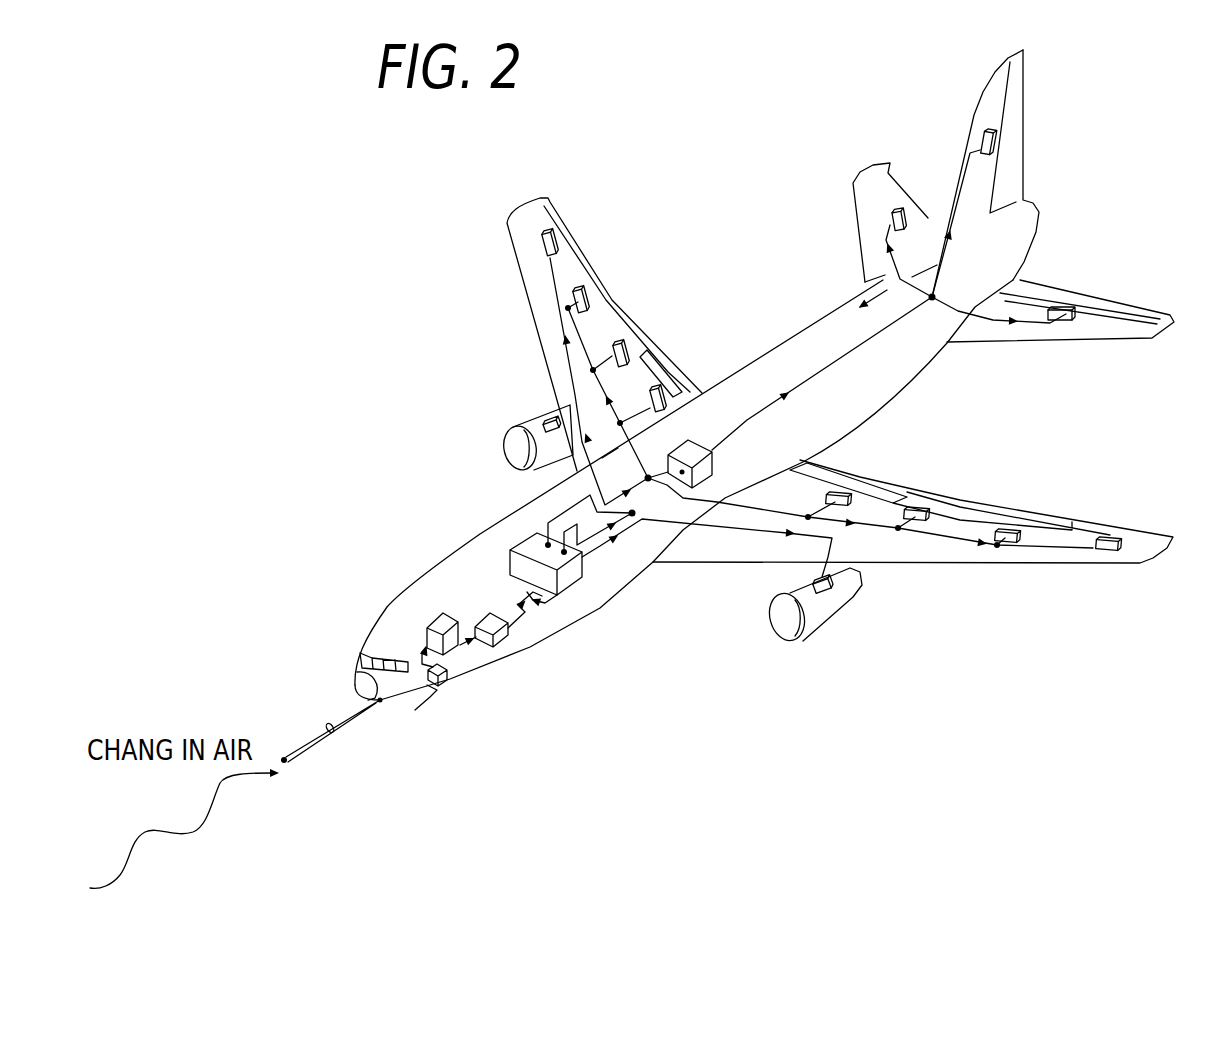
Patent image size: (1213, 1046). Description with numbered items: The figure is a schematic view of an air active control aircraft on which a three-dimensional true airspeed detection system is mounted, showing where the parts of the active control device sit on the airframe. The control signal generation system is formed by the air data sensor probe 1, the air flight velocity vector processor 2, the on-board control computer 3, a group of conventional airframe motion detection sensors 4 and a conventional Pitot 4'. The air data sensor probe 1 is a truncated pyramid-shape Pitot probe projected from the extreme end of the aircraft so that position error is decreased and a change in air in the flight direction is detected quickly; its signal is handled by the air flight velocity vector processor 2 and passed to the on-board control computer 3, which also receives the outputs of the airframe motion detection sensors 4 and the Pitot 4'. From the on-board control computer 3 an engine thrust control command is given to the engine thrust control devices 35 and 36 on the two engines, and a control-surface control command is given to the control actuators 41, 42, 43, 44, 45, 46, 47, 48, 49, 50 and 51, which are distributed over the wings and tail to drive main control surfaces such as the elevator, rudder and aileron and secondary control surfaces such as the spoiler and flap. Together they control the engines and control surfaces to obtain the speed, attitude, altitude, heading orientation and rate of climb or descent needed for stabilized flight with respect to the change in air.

The air data sensor probe 1 is at (287, 760).
The air flight velocity vector processor 2 is at (437, 622).
The on-board control computer 3 is at (570, 580).
The airframe motion detection sensors 4 is at (713, 558).
The conventional Pitot 4' is at (447, 718).
The engine thrust control device 35 is at (827, 593).
The engine thrust control device 36 is at (545, 422).
The control actuator 41 is at (1060, 323).
The control actuator 42 is at (892, 217).
The control actuator 43 is at (980, 140).
The control actuator 44 is at (1113, 548).
The control actuator 45 is at (542, 241).
The control actuator 46 is at (920, 510).
The control actuator 47 is at (627, 357).
The control actuator 48 is at (1013, 543).
The control actuator 49 is at (583, 304).
The control actuator 50 is at (840, 497).
The control actuator 51 is at (667, 400).